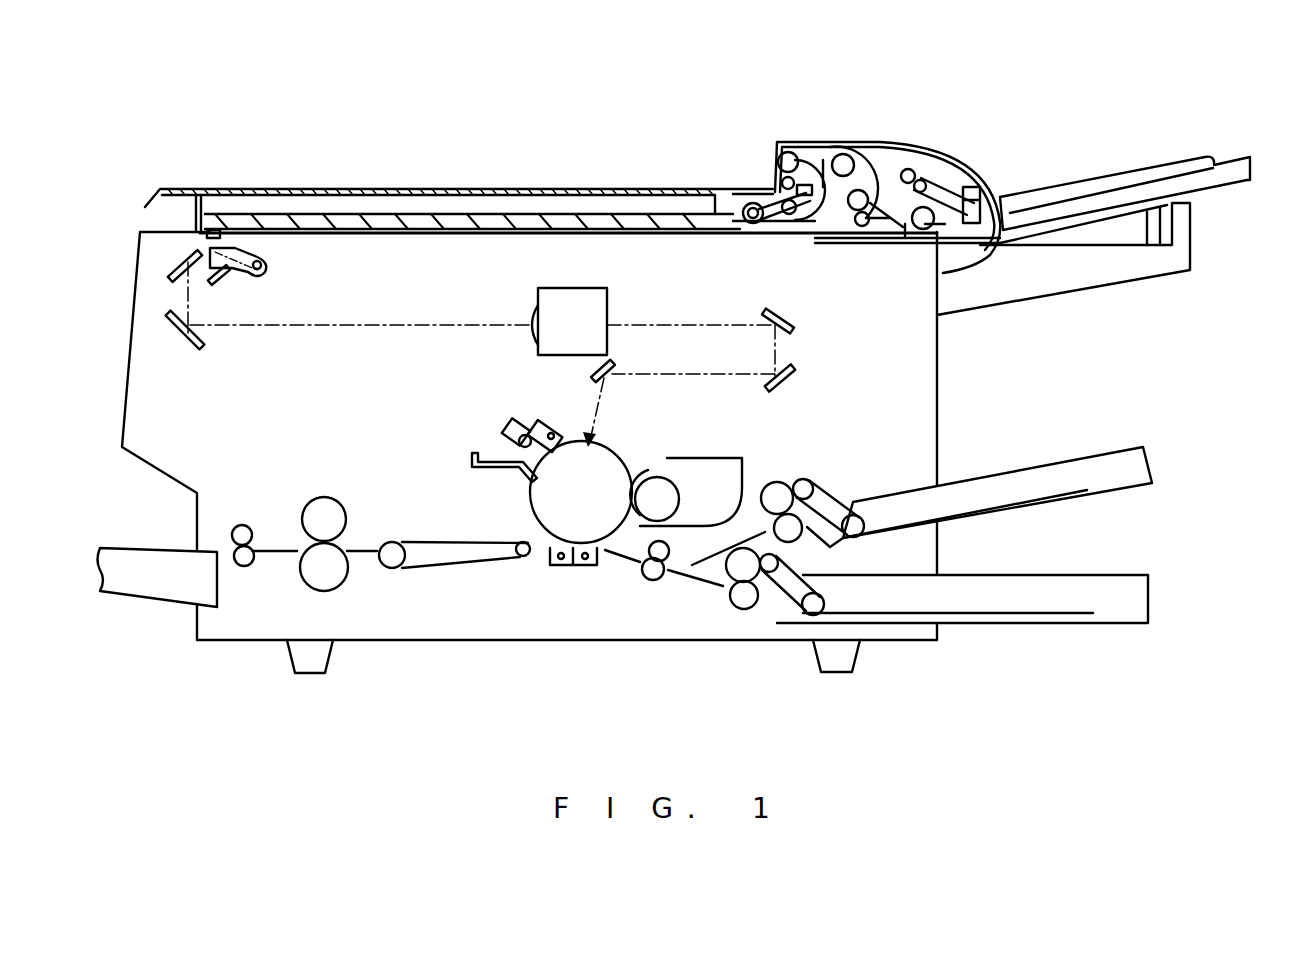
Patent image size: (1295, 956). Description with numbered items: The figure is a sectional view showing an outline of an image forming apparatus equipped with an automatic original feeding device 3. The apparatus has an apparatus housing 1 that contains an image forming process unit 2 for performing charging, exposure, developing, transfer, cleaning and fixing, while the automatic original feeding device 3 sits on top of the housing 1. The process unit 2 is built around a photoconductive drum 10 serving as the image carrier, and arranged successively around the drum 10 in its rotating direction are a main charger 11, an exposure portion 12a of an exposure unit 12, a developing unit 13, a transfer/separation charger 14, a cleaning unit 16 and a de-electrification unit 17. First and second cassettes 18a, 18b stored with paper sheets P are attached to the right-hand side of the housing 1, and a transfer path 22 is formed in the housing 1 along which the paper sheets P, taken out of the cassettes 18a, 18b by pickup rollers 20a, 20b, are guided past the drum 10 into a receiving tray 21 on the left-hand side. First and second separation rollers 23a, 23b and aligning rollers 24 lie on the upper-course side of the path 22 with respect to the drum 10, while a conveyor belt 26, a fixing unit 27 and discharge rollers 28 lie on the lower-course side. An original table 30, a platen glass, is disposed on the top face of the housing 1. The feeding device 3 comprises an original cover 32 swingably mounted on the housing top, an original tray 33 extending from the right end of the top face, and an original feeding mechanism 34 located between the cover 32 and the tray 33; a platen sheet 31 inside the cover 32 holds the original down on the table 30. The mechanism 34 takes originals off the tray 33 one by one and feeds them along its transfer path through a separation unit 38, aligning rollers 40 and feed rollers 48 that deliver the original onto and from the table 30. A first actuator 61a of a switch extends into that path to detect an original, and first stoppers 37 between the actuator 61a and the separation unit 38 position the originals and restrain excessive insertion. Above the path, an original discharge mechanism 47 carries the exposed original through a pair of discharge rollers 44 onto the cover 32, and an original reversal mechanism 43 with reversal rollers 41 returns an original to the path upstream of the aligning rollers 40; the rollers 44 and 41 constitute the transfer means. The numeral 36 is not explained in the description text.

The apparatus housing 1 is at (656, 438).
The image forming process unit 2 is at (476, 416).
The automatic original feeding device 3 is at (971, 150).
The photoconductive drum 10 is at (547, 492).
The main charger 11 is at (548, 416).
The exposure unit 12 is at (601, 307).
The exposure portion 12a is at (628, 416).
The developing unit 13 is at (687, 462).
The transfer/separation charger 14 is at (557, 586).
The cleaning unit 16 is at (473, 459).
The de-electrification unit 17 is at (493, 413).
The first cassette 18a is at (1025, 493).
The second cassette 18b is at (1010, 599).
The pickup roller 20a is at (850, 478).
The pickup roller 20b is at (842, 578).
The receiving tray 21 is at (158, 600).
The transfer path 22 is at (466, 583).
The first separation rollers 23a is at (757, 492).
The second separation rollers 23b is at (736, 620).
The aligning rollers 24 is at (654, 583).
The conveyor belt 26 is at (406, 527).
The fixing unit 27 is at (315, 513).
The discharge rollers 28 is at (260, 511).
The original table 30 is at (566, 245).
The platen sheet 31 is at (472, 254).
The original cover 32 is at (459, 170).
The original tray 33 is at (1125, 180).
The original feeding mechanism 34 is at (969, 139).
The feed arm 36 is at (965, 166).
The first stoppers 37 is at (907, 258).
The separation unit 38 is at (971, 156).
The aligning rollers 40 is at (834, 241).
The reversal rollers 41 is at (836, 151).
The original reversal mechanism 43 is at (940, 177).
The discharge rollers 44 is at (752, 162).
The original discharge mechanism 47 is at (827, 137).
The feed rollers 48 is at (763, 242).
The first actuator 61a is at (992, 189).
The paper sheets P is at (967, 477).